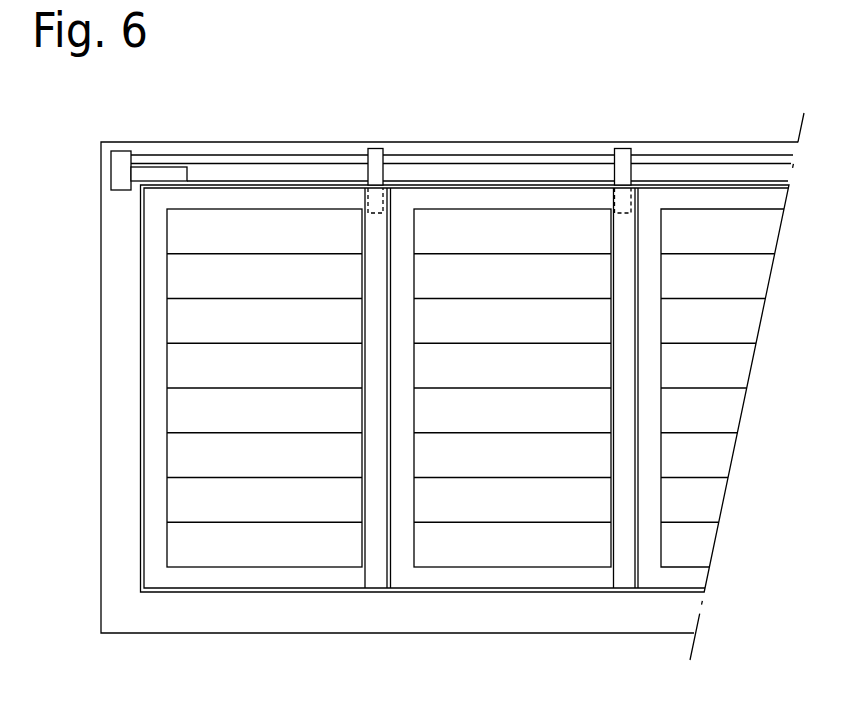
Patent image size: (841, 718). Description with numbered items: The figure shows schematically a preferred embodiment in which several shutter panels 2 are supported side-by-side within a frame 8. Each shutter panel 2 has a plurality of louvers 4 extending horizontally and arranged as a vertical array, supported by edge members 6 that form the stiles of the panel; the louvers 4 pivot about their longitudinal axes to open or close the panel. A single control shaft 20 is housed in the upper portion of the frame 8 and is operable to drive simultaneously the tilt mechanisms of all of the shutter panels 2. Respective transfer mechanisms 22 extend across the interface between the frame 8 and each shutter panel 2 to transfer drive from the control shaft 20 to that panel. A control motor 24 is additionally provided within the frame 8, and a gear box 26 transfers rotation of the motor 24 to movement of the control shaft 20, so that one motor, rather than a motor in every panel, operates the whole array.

The shutter panel 2 is at (305, 542).
The louvers 4 is at (684, 451).
The edge members 6 is at (157, 330).
The frame 8 is at (228, 151).
The control shaft 20 is at (498, 161).
The transfer mechanism 22 is at (376, 153).
The control motor 24 is at (148, 172).
The gear box 26 is at (118, 177).